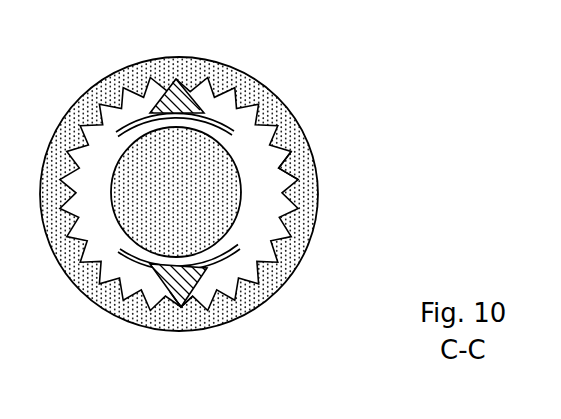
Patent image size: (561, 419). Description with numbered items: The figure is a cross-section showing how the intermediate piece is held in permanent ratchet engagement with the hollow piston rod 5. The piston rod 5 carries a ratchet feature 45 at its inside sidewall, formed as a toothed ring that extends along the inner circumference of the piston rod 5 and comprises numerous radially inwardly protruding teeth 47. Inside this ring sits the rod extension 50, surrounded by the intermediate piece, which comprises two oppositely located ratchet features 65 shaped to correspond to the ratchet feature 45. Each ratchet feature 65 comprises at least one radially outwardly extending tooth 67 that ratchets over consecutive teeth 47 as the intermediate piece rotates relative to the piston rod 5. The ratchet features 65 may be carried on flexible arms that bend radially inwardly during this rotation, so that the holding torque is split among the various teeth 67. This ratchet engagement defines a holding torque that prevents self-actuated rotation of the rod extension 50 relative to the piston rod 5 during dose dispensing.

The piston rod 5 is at (303, 163).
The ratchet feature 45 is at (254, 120).
The teeth 47 is at (298, 166).
The rod extension 50 is at (241, 205).
The ratchet feature 65 is at (176, 79).
The tooth 67 is at (181, 307).